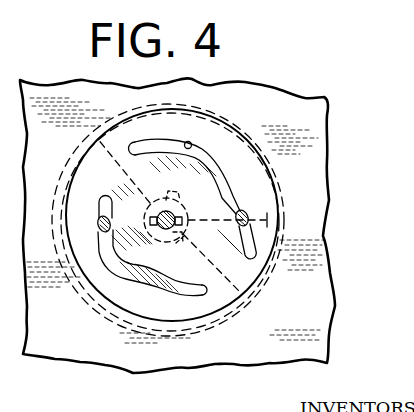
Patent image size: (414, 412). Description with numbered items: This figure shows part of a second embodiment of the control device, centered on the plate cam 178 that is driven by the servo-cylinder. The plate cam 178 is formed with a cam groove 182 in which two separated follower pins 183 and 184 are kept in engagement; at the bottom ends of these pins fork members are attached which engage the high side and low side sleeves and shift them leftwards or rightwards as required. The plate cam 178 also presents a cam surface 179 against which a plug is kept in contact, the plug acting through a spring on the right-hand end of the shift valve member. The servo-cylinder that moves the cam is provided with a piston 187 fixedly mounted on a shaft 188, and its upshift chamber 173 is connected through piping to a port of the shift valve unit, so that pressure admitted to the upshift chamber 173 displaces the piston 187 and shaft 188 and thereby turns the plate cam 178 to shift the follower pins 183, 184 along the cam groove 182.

The upshift chamber 173 is at (106, 302).
The cam surface 179 is at (88, 150).
The piston 187 is at (220, 296).
The shaft 188 is at (165, 239).
The cam groove 182 is at (191, 142).
The follower pin 184 is at (268, 220).
The plate cam 178 is at (233, 306).
The follower pin 183 is at (98, 220).